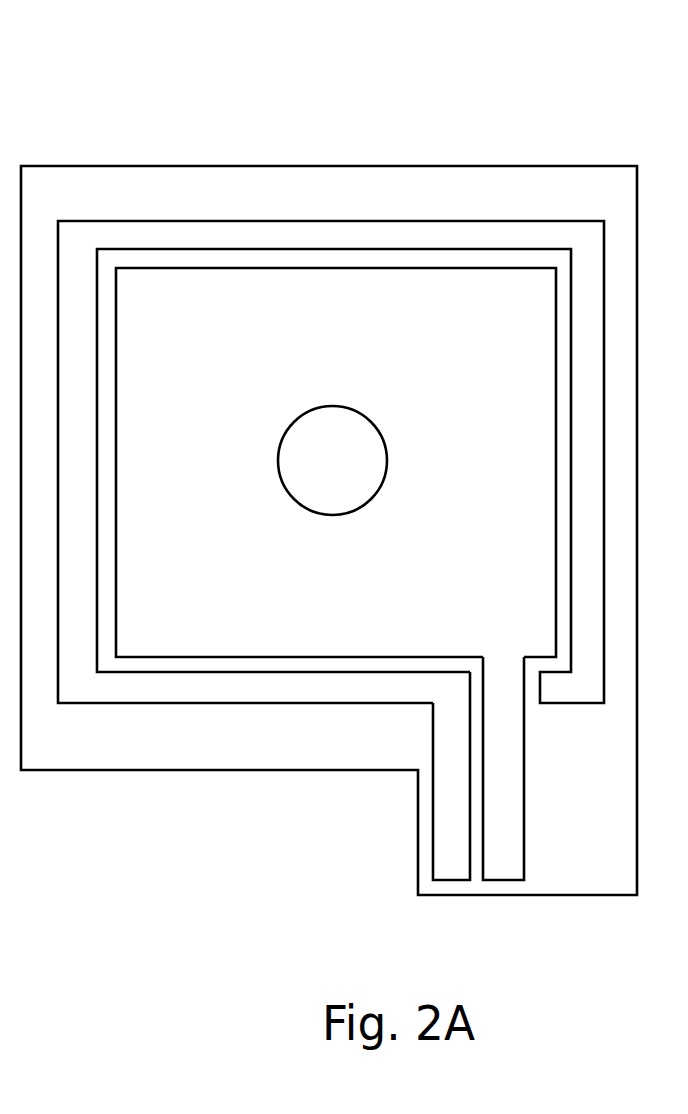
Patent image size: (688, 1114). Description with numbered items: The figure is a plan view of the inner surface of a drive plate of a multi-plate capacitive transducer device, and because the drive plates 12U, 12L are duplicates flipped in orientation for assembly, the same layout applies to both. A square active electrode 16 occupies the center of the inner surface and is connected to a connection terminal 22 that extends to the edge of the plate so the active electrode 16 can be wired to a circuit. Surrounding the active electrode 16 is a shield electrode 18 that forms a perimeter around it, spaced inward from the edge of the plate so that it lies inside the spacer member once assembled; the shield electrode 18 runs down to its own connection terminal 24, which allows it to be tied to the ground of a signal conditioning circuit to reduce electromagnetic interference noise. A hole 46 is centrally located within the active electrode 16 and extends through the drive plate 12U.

The upper drive plate 12U is at (329, 457).
The lower drive plate 12L is at (479, 128).
The active electrode 16 is at (491, 579).
The shield electrode 18 is at (599, 446).
The connection terminal 22 is at (521, 803).
The connection terminal 24 is at (465, 803).
The hole 46 is at (347, 406).